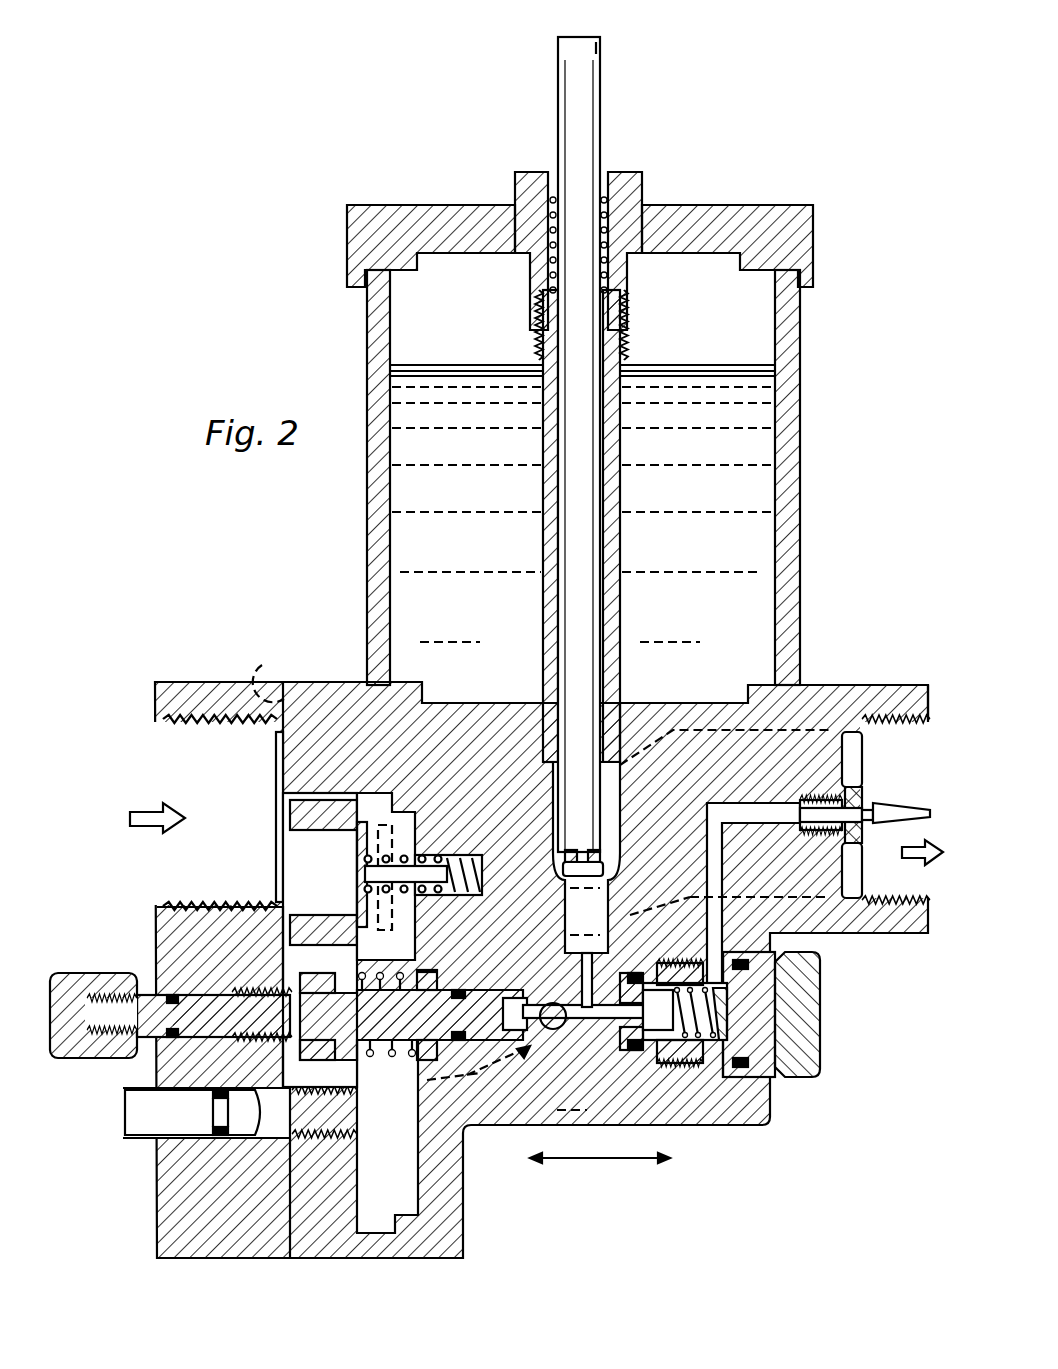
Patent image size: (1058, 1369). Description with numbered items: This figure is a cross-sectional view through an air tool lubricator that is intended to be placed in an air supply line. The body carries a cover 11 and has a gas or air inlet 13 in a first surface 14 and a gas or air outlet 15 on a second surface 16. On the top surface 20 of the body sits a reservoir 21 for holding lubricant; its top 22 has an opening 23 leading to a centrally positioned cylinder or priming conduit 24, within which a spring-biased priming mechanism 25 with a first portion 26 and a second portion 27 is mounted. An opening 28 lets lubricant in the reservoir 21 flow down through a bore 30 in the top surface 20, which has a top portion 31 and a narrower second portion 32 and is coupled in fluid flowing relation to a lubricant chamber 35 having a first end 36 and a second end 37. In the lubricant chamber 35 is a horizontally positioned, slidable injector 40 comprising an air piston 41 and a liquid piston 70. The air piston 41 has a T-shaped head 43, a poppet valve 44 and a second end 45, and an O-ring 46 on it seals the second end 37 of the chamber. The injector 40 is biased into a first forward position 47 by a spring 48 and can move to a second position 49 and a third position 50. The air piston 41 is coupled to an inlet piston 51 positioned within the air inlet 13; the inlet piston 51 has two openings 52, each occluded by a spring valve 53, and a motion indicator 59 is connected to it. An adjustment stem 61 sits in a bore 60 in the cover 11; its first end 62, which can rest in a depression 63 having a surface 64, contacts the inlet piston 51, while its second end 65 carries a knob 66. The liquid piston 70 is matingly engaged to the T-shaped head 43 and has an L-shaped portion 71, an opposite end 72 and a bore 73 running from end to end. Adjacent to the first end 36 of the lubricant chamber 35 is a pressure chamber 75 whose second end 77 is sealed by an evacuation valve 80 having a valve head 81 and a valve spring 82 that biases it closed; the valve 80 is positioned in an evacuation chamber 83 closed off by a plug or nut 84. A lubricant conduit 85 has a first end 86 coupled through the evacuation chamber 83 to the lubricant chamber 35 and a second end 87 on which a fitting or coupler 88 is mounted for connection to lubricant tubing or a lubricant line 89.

The cover 11 is at (157, 697).
The gas or air inlet 13 is at (371, 800).
The first surface 14 is at (265, 672).
The gas or air outlet 15 is at (901, 904).
The second surface 16 is at (931, 702).
The top surface 20 is at (236, 682).
The reservoir 21 is at (802, 409).
The top 22 is at (752, 215).
The opening 23 is at (604, 172).
The cylinder or priming conduit 24 is at (605, 545).
The spring-biased priming mechanism 25 is at (591, 96).
The first portion 26 is at (601, 52).
The second portion 27 is at (593, 817).
The opening 28 is at (546, 703).
The bore 30 is at (622, 705).
The top portion 31 is at (540, 734).
The narrower second portion 32 is at (615, 948).
The lubricant chamber 35 is at (564, 1091).
The first end 36 is at (598, 1020).
The second end 37 is at (438, 1040).
The injector 40 is at (466, 1068).
The air piston 41 is at (400, 1018).
The T-shaped end or head 43 is at (540, 997).
The poppet valve 44 is at (558, 1003).
The second end 45 is at (317, 985).
The O-ring 46 is at (460, 990).
The first forward position 47 is at (520, 1164).
The spring 48 is at (421, 972).
The second position 49 is at (600, 1172).
The third position 50 is at (684, 1159).
The inlet piston 51 is at (316, 952).
The openings 52 is at (309, 828).
The spring valve 53 is at (430, 858).
The motion indicator 59 is at (180, 1121).
The bore 60 is at (215, 980).
The adjustment stem 61 is at (208, 1027).
The first end 62 is at (285, 1012).
The depression 63 is at (283, 1063).
The surface 64 is at (250, 986).
The second end 65 is at (92, 1000).
The knob 66 is at (121, 998).
The liquid piston 70 is at (596, 1020).
The L-shaped portion 71 is at (508, 1062).
The opposite end 72 is at (627, 1052).
The bore 73 is at (623, 975).
The pressure chamber 75 is at (654, 1040).
The second end 77 is at (677, 1066).
The evacuation valve 80 is at (713, 936).
The valve head 81 is at (661, 966).
The valve spring 82 is at (717, 1007).
The evacuation chamber 83 is at (718, 1028).
The plug or nut 84 is at (803, 967).
The lubricant conduit 85 is at (749, 808).
The first end 86 is at (722, 978).
The second end 87 is at (868, 806).
The fitting or coupler 88 is at (910, 806).
The lubricant tubing or lubricant line 89 is at (906, 822).